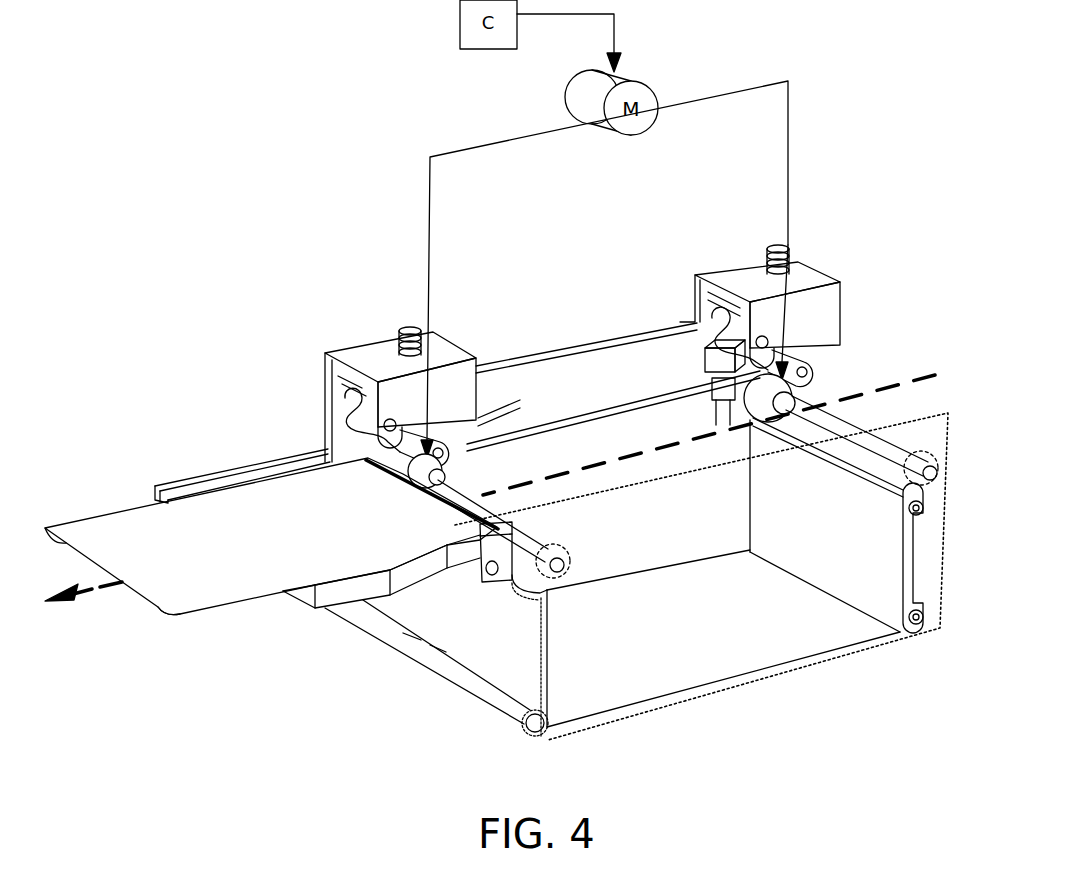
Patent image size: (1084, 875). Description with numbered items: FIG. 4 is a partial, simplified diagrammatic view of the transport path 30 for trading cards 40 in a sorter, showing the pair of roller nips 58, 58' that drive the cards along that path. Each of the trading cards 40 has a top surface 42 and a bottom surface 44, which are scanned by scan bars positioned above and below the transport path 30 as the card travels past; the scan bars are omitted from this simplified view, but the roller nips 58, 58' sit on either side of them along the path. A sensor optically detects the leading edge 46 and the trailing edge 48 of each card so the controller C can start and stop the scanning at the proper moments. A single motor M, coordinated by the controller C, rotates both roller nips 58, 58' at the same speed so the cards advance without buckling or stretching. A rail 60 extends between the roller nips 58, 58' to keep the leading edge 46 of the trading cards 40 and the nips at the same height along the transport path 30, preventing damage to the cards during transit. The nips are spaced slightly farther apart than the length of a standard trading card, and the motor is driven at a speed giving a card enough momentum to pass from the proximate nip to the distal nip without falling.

The transport path 30 is at (73, 597).
The trading cards 40 is at (138, 523).
The top surface 42 is at (262, 548).
The bottom surface 44 is at (56, 527).
The leading edge 46 is at (143, 603).
The trailing edge 48 is at (372, 460).
The roller nip 58 is at (760, 365).
The roller nip 58' is at (374, 394).
The rail 60 is at (578, 408).